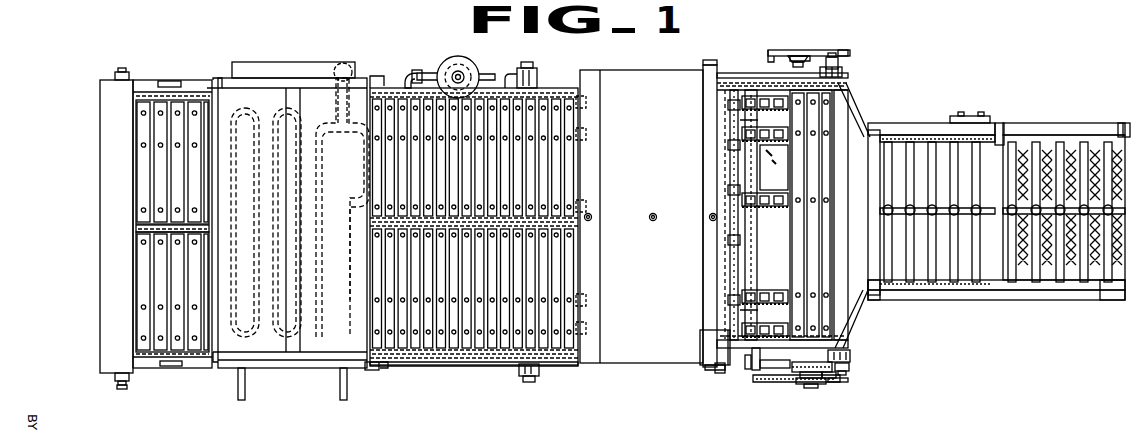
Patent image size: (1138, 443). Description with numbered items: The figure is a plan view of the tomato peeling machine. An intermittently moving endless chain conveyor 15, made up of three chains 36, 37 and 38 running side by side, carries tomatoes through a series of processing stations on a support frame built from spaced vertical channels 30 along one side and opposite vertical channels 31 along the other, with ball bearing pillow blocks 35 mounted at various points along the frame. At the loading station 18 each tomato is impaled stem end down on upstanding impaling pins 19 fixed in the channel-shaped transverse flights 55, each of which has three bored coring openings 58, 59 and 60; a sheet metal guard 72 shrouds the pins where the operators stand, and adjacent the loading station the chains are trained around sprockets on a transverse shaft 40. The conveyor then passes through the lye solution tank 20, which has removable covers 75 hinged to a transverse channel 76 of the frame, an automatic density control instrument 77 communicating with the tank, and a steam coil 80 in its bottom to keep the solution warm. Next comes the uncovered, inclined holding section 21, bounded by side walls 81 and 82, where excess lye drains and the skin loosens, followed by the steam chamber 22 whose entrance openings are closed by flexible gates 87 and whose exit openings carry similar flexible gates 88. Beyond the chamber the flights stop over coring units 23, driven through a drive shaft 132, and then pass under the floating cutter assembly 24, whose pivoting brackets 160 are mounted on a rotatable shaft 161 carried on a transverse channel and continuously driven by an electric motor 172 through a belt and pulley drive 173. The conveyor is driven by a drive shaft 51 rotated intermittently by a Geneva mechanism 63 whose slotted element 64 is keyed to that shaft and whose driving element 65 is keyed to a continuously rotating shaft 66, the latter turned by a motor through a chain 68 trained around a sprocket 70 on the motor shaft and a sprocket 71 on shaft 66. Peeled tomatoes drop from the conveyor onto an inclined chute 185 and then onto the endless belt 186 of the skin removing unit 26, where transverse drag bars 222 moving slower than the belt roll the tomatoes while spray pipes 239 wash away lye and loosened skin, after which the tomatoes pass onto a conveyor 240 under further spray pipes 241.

The endless chain conveyor 15 is at (507, 227).
The loading station 18 is at (132, 230).
The impaling pins 19 is at (135, 309).
The lye solution tank 20 is at (288, 225).
The holding section 21 is at (545, 100).
The steam chamber 22 is at (582, 100).
The coring unit 23 is at (748, 166).
The floating cutter assembly 24 is at (748, 116).
The skin removing unit 26 is at (999, 213).
The vertical channels 30 is at (215, 368).
The vertical channels 31 is at (215, 80).
The ball bearing pillow blocks 35 is at (125, 74).
The outer chain 36 is at (142, 88).
The middle chain 37 is at (137, 226).
The outer chain 38 is at (137, 362).
The transverse rotatable shaft 40 is at (125, 390).
The drive shaft 51 is at (840, 380).
The transverse flights 55 is at (562, 295).
The coring opening 58 is at (139, 115).
The coring opening 59 is at (141, 145).
The coring opening 60 is at (142, 210).
The Geneva mechanism 63 is at (810, 50).
The slotted element 64 is at (844, 52).
The driving element 65 is at (770, 50).
The continuously rotating shaft 66 is at (798, 49).
The chain 68 is at (780, 372).
The sprocket 70 is at (755, 374).
The sprocket 71 is at (825, 379).
The sheet metal guard 72 is at (105, 176).
The removable covers 75 is at (286, 235).
The transverse channel 76 is at (308, 368).
The automatic density control instrument 77 is at (456, 64).
The steam coil 80 is at (321, 240).
The side wall 81 is at (464, 364).
The side wall 82 is at (587, 84).
The flexible gates 87 is at (590, 137).
The flexible gates 88 is at (728, 105).
The drive shaft 132 is at (762, 384).
The brackets 160 is at (748, 125).
The rotatable shaft 161 is at (768, 440).
The electric motor 172 is at (712, 360).
The belt and pulley drive 173 is at (712, 374).
The inclined chute 185 is at (868, 250).
The endless belt 186 is at (928, 160).
The drag bars 222 is at (963, 252).
The spray pipes 239 is at (914, 252).
The conveyor 240 is at (1062, 150).
The spray pipes 241 is at (1062, 250).